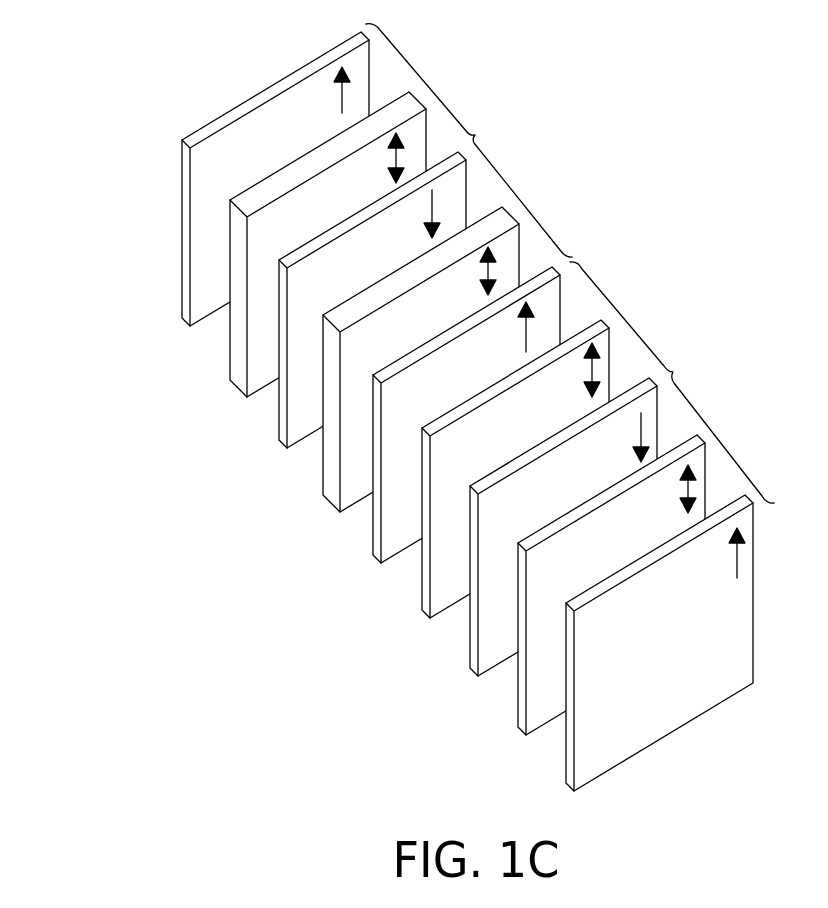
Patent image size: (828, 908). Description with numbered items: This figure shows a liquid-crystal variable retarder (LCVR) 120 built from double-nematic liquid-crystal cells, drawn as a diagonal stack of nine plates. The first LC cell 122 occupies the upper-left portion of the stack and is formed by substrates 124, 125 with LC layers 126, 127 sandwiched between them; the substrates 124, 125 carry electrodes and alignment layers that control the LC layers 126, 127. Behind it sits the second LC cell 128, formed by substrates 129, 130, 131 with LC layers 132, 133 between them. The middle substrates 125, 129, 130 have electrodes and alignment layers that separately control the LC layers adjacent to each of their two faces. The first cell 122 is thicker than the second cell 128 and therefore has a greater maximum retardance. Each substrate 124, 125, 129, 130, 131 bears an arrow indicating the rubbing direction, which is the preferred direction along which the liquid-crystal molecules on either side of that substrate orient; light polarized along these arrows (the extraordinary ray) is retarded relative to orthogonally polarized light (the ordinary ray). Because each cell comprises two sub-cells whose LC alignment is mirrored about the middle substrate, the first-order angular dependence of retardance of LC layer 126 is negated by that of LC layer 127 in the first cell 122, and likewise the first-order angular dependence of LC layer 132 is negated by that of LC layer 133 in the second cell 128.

The liquid-crystal variable retarder 120 is at (130, 207).
The first LC cell 122 is at (476, 135).
The second LC cell 128 is at (676, 372).
The substrate 124 is at (181, 325).
The LC layer 126 is at (240, 390).
The substrate 125 is at (285, 445).
The LC layer 127 is at (337, 505).
The substrate 129 is at (373, 560).
The LC layer 132 is at (425, 611).
The substrate 130 is at (472, 672).
The LC layer 133 is at (520, 728).
The substrate 131 is at (566, 787).